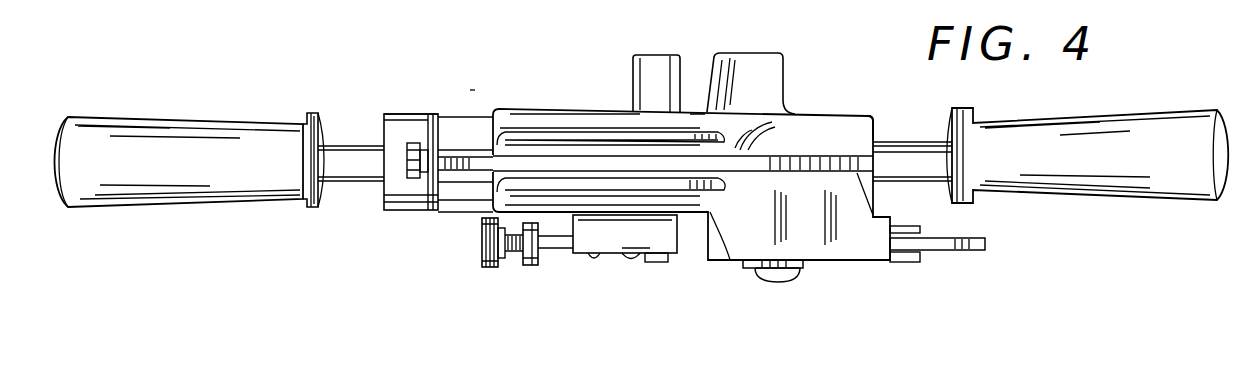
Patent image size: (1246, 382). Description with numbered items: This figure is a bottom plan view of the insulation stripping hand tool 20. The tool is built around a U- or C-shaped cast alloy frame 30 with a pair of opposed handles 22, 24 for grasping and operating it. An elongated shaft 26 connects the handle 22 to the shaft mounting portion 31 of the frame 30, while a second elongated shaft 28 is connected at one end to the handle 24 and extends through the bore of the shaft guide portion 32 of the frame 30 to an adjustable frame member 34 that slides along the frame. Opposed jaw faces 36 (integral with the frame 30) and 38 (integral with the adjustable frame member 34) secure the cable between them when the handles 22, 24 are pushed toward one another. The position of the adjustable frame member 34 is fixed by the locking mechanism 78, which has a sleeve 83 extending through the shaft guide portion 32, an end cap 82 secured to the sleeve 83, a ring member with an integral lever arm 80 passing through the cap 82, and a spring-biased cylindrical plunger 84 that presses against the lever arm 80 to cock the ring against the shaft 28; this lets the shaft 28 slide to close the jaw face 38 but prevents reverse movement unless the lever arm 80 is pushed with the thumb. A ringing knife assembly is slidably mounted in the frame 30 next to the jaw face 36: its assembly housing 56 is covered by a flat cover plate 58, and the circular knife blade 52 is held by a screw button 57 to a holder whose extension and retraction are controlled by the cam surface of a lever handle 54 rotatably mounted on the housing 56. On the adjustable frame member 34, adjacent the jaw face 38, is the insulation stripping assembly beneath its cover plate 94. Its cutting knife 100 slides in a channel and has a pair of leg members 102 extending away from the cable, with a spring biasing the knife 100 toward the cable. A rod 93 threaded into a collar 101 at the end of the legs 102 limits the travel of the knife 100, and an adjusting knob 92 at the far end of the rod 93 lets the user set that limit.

The hand tool 20 is at (473, 88).
The handle 22 is at (1128, 118).
The handle 24 is at (170, 127).
The elongated shaft 26 is at (913, 144).
The elongated shaft 28 is at (342, 146).
The frame 30 is at (572, 112).
The shaft mounting portion 31 is at (870, 120).
The shaft guide portion 32 is at (478, 117).
The adjustable frame member 34 is at (633, 93).
The jaw face 36 is at (712, 65).
The jaw face 38 is at (685, 65).
The circular knife blade 52 is at (815, 268).
The lever handle 54 is at (975, 238).
The assembly housing 56 is at (908, 226).
The screw button 57 is at (760, 280).
The cover plate 58 is at (915, 262).
The locking mechanism 78 is at (414, 106).
The lever arm 80 is at (413, 180).
The end cap 82 is at (400, 115).
The sleeve 83 is at (430, 115).
The cylindrical plunger 84 is at (428, 175).
The adjusting knob 92 is at (482, 246).
The rod 93 is at (505, 257).
The cover plate 94 is at (622, 257).
The cutting knife 100 is at (665, 258).
The collar 101 is at (573, 227).
The leg members 102 is at (558, 250).